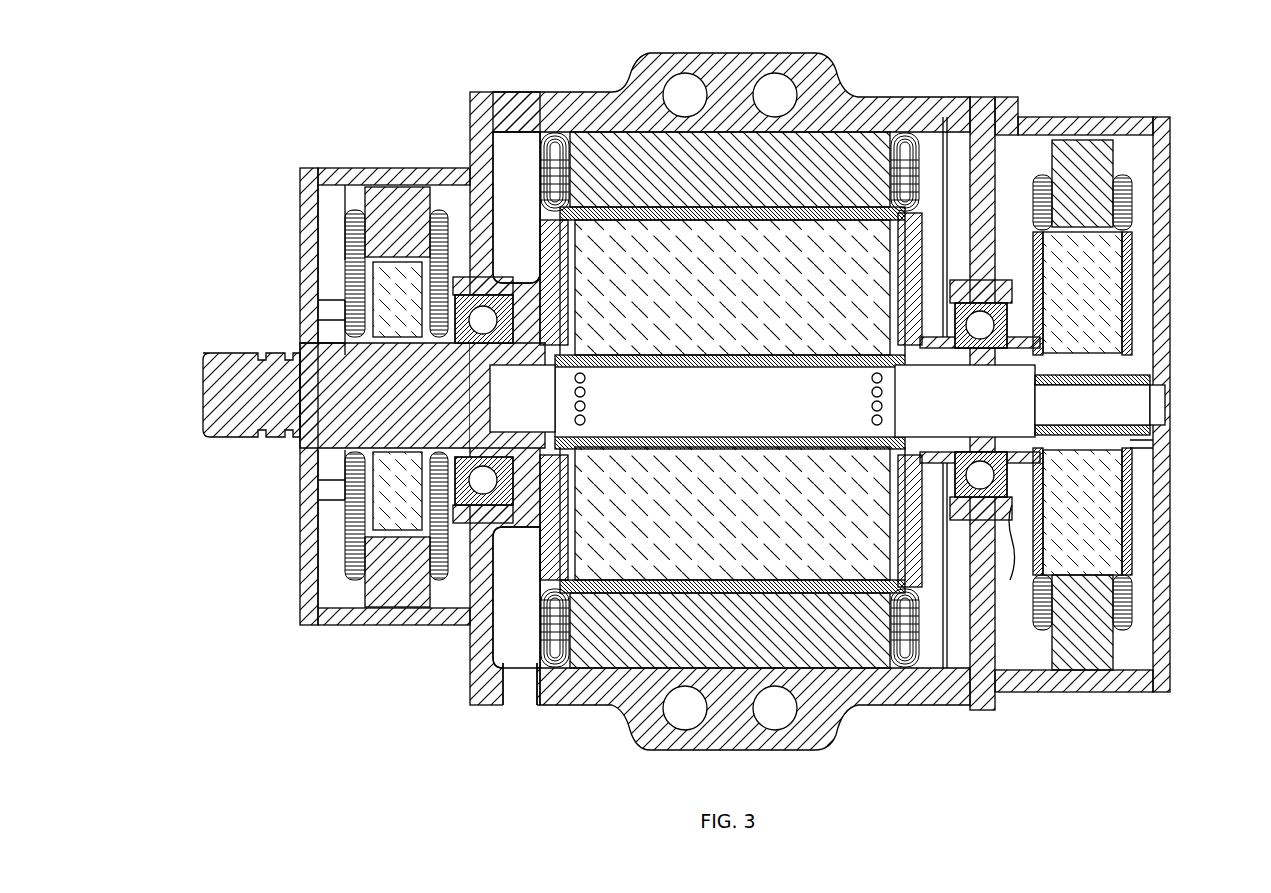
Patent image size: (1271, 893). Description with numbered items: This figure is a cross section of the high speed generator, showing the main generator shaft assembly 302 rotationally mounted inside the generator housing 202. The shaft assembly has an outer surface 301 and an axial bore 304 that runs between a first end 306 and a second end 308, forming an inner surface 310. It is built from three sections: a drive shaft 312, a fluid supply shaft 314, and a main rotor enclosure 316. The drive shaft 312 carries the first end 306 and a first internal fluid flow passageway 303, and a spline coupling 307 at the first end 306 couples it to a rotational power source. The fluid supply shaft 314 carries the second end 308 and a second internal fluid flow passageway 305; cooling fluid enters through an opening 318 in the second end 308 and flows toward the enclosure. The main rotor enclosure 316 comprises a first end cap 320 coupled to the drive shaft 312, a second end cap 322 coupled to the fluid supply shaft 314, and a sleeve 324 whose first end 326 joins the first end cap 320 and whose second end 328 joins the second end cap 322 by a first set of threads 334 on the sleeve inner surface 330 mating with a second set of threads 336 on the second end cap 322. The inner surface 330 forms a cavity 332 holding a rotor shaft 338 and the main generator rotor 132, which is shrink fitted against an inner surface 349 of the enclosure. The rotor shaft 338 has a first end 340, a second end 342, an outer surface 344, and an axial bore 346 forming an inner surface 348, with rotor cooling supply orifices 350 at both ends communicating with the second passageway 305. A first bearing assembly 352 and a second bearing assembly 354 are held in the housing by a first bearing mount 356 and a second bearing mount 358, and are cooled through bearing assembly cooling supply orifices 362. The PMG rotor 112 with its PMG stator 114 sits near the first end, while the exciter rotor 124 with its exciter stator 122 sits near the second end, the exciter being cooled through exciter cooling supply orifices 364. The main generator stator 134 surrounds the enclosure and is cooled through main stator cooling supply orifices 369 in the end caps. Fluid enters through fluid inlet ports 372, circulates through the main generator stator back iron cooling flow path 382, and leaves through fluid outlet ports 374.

The PMG rotor 112 is at (415, 312).
The PMG stator 114 is at (346, 210).
The exciter stator 122 is at (1153, 180).
The exciter rotor 124 is at (1064, 553).
The main generator rotor 132 is at (712, 302).
The main generator stator 134 is at (712, 178).
The generator housing 202 is at (835, 55).
The outer surface 301 is at (318, 298).
The main generator shaft assembly 302 is at (412, 389).
The first internal fluid flow passageway 303 is at (504, 408).
The axial bore 304 is at (1048, 290).
The second internal fluid flow passageway 305 is at (927, 396).
The first end 306 is at (300, 343).
The spline coupling 307 is at (215, 418).
The second end 308 is at (1170, 345).
The inner surface 310 is at (1037, 405).
The drive shaft 312 is at (335, 470).
The fluid supply shaft 314 is at (1160, 452).
The main rotor enclosure 316 is at (608, 212).
The opening 318 is at (1165, 412).
The first end cap 320 is at (520, 270).
The second end cap 322 is at (890, 358).
The sleeve 324 is at (811, 168).
The first end 326 is at (620, 230).
The second end 328 is at (866, 228).
The inner surface 330 is at (692, 222).
The cavity 332 is at (872, 312).
The first set of threads 334 is at (872, 605).
The second set of threads 336 is at (885, 565).
The rotor shaft 338 is at (718, 452).
The first end 340 is at (575, 470).
The second end 342 is at (885, 470).
The outer surface 344 is at (694, 355).
The axial bore 346 is at (712, 396).
The inner surface 348 is at (700, 437).
The inner surface 349 is at (728, 580).
The rotor cooling supply orifices 350 is at (586, 378).
The first bearing assembly 352 is at (562, 508).
The second bearing assembly 354 is at (1012, 585).
The first bearing mount 356 is at (483, 213).
The second bearing mount 358 is at (985, 97).
The bearing assembly cooling supply orifices 362 is at (565, 300).
The exciter cooling supply orifices 364 is at (1052, 345).
The main stator cooling supply orifices 369 is at (580, 270).
The fluid inlet ports 372 is at (688, 53).
The fluid outlet ports 374 is at (520, 705).
The main generator stator back iron cooling flow path 382 is at (702, 88).